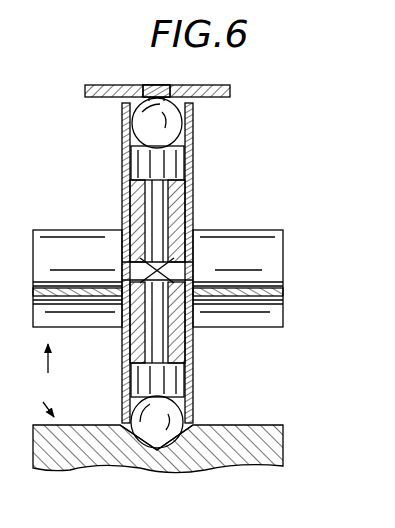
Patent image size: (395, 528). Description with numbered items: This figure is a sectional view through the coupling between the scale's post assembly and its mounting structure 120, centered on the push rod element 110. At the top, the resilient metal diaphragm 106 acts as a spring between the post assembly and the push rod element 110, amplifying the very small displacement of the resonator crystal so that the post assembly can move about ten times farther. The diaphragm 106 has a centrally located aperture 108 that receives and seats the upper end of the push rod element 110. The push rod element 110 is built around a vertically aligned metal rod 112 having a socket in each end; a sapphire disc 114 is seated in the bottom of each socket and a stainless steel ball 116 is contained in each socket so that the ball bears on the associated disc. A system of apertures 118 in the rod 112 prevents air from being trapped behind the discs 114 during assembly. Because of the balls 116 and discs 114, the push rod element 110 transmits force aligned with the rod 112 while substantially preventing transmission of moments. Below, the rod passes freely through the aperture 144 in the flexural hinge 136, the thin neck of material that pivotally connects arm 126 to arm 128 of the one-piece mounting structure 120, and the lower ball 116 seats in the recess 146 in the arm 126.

The resilient metal diaphragm 106 is at (226, 89).
The centrally located aperture 108 is at (160, 86).
The push rod element 110 is at (220, 205).
The metal rod 112 is at (122, 203).
The sapphire disc 114 is at (193, 163).
The stainless steel ball 116 is at (193, 125).
The system of apertures 118 is at (172, 263).
The mounting structure 120 is at (45, 396).
The arm 126 is at (283, 426).
The arm 128 is at (78, 230).
The flexural hinge 136 is at (268, 290).
The aperture 144 is at (90, 341).
The recess 146 is at (125, 428).